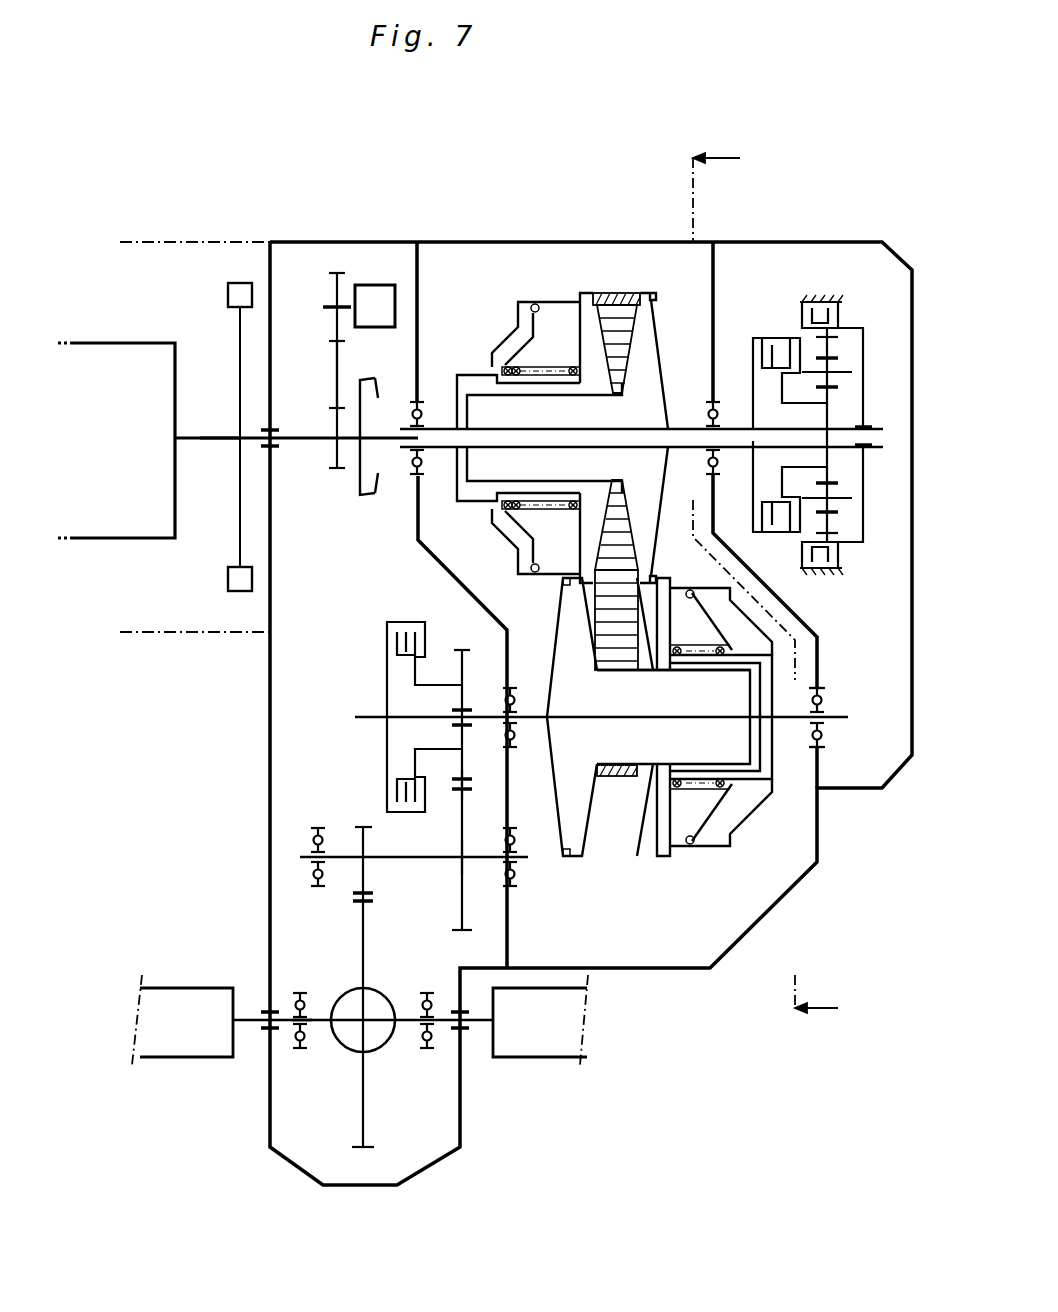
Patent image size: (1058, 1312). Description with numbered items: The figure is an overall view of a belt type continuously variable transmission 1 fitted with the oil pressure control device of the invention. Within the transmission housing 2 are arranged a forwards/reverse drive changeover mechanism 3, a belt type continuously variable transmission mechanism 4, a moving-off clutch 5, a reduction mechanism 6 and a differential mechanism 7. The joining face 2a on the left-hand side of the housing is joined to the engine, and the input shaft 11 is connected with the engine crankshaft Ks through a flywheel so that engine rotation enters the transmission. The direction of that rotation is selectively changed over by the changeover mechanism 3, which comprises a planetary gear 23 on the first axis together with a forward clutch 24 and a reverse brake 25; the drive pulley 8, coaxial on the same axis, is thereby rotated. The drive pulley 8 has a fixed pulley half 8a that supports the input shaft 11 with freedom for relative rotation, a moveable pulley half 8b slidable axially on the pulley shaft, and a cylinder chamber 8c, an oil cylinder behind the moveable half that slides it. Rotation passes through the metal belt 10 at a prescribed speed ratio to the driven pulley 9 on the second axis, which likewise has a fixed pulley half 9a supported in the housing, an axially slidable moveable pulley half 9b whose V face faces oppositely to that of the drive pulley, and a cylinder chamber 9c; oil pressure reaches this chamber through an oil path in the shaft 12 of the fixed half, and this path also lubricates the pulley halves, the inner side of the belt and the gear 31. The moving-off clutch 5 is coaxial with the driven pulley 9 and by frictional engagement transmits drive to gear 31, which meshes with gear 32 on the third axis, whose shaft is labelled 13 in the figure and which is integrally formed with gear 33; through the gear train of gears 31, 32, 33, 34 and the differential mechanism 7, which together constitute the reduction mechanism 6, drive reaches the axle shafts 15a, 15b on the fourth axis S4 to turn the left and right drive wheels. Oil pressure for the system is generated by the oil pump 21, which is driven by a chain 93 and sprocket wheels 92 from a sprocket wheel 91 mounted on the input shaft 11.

The continuously variable transmission 1 is at (573, 182).
The transmission housing 2 is at (896, 252).
The joining face 2a is at (270, 270).
The forwards/reverse drive changeover mechanism 3 is at (883, 207).
The belt type continuously variable transmission mechanism 4 is at (531, 292).
The moving-off clutch 5 is at (400, 622).
The reduction mechanism 6 is at (262, 858).
The differential mechanism 7 is at (384, 1066).
The drive pulley 8 is at (688, 207).
The fixed pulley half 8a is at (648, 293).
The moveable pulley half 8b is at (597, 303).
The cylinder chamber 8c is at (553, 330).
The driven pulley 9 is at (735, 910).
The fixed pulley half 9a is at (585, 825).
The moveable pulley half 9b is at (657, 820).
The cylinder chamber 9c is at (703, 800).
The metal belt 10 is at (593, 632).
The input shaft 11 is at (882, 440).
The shaft 12 is at (840, 716).
The third synchronizer S3 13 is at (447, 862).
The axle shaft 15a is at (200, 1043).
The axle shaft 15b is at (520, 1043).
The oil pump 21 is at (370, 287).
The planetary gear 23 is at (840, 355).
The forward clutch 24 is at (765, 338).
The reverse brake 25 is at (802, 320).
The gear 31 is at (462, 650).
The gear 32 is at (462, 812).
The gear 33 is at (363, 823).
The gear 34 is at (362, 935).
The sprocket wheel 91 is at (337, 468).
The sprocket wheels 92 is at (337, 275).
The chain 93 is at (337, 380).
The engine crankshaft Ks is at (218, 440).
The fourth axis S4 is at (320, 1023).